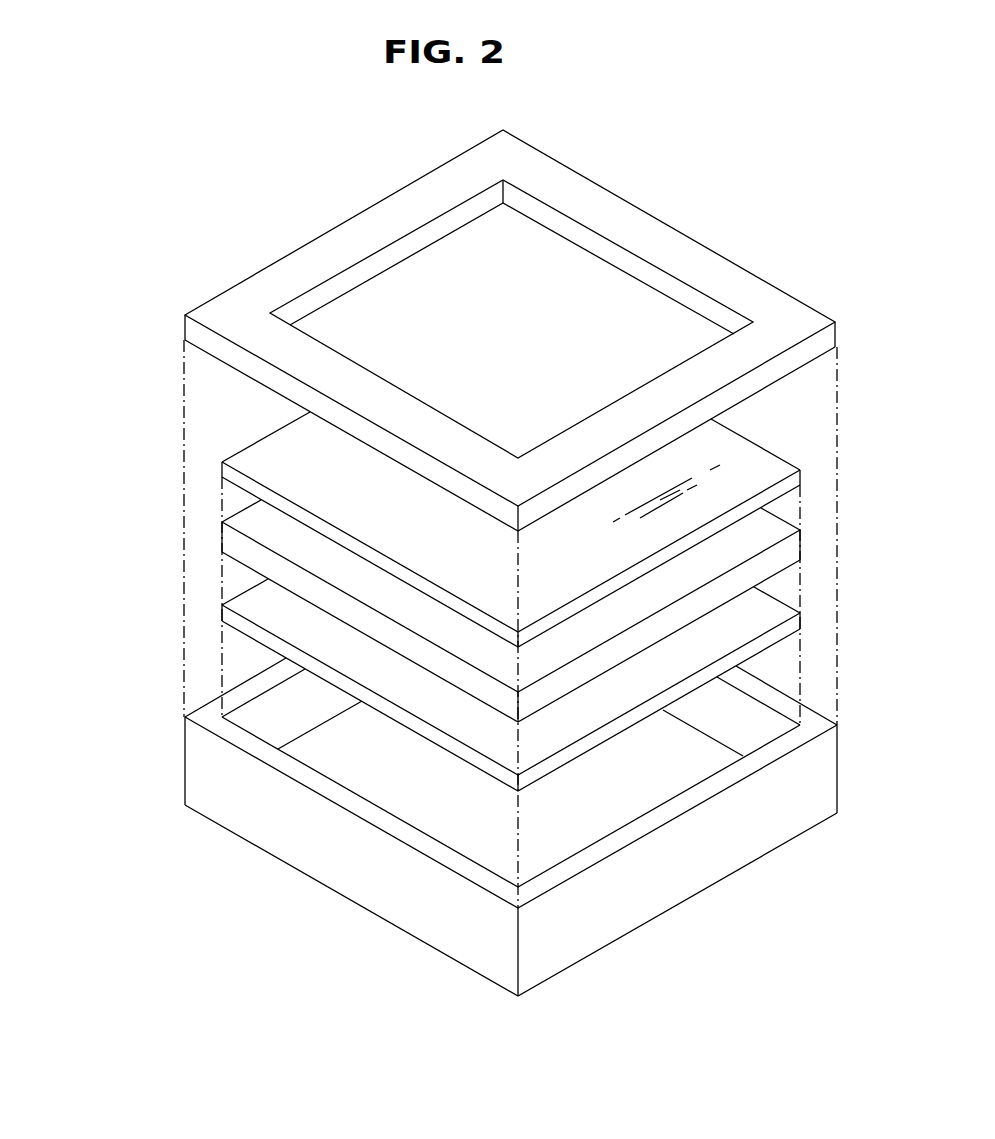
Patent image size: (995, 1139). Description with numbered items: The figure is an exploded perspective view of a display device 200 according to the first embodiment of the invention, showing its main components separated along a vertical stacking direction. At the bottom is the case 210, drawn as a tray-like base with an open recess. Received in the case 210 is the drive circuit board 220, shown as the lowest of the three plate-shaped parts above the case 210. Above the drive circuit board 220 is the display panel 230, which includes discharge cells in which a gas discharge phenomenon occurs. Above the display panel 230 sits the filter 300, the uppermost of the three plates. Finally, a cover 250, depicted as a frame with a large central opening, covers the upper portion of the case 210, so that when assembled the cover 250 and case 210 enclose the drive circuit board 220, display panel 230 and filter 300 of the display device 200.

The display device 200 is at (710, 214).
The cover 250 is at (207, 335).
The filter 300 is at (225, 472).
The display panel 230 is at (225, 537).
The drive circuit board 220 is at (225, 615).
The case 210 is at (210, 772).